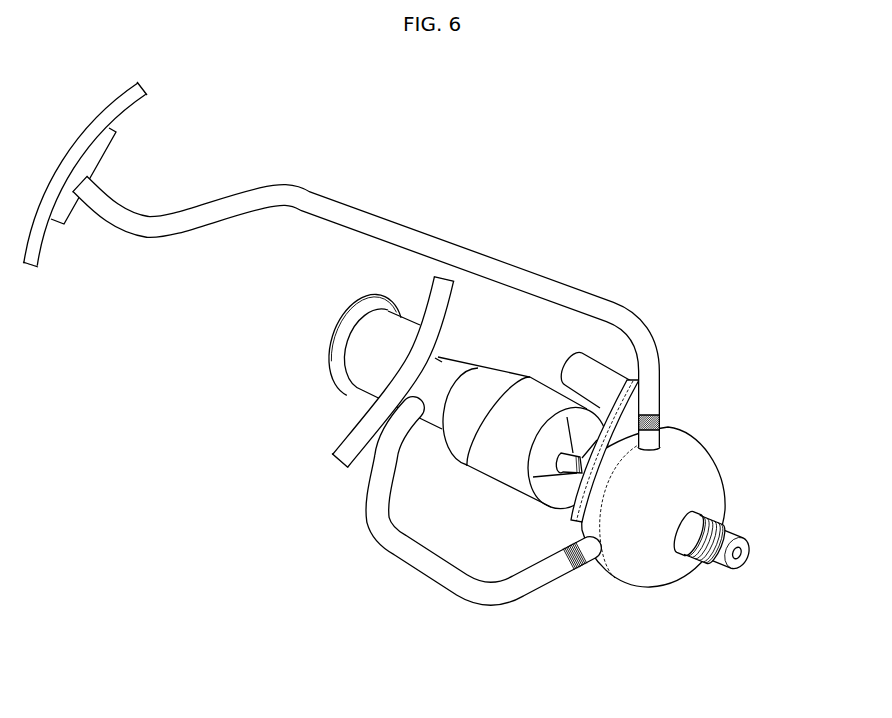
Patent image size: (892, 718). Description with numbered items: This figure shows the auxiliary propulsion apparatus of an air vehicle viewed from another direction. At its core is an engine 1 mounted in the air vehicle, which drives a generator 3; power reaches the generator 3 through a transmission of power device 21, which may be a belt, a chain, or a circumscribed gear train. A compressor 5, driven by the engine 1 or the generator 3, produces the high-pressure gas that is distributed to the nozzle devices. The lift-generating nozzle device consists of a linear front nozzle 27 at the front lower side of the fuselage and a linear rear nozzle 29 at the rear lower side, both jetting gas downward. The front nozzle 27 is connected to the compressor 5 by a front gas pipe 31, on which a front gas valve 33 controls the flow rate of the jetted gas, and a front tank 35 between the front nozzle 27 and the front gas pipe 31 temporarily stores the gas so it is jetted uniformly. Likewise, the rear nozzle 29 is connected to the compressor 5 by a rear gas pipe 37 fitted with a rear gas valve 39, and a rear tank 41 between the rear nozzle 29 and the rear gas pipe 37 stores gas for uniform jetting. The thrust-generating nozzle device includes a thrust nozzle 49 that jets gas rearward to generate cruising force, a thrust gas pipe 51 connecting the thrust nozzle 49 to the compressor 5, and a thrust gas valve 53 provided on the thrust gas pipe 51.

The engine 1 is at (497, 453).
The generator 3 is at (587, 370).
The compressor 5 is at (657, 563).
The transmission of power device 21 is at (625, 407).
The front nozzle 27 is at (42, 240).
The rear nozzle 29 is at (343, 450).
The front gas pipe 31 is at (372, 223).
The front gas valve 33 is at (660, 421).
The front tank 35 is at (101, 157).
The rear gas pipe 37 is at (453, 582).
The rear gas valve 39 is at (583, 563).
The rear tank 41 is at (435, 360).
The thrust nozzle 49 is at (742, 560).
The thrust gas pipe 51 is at (738, 537).
The thrust gas valve 53 is at (718, 527).